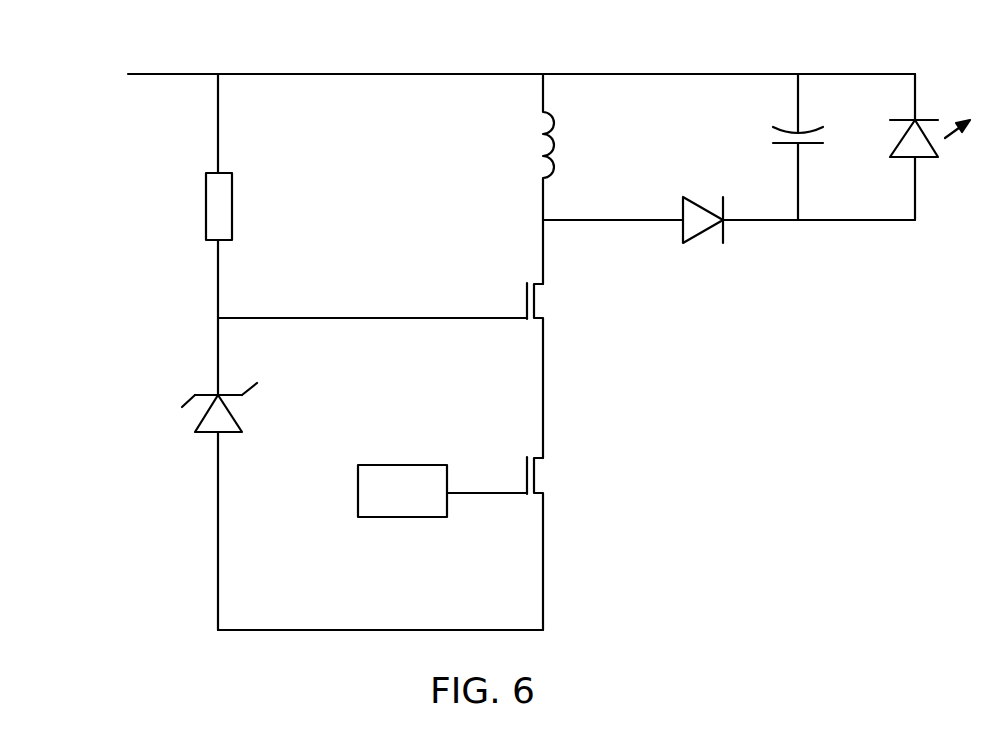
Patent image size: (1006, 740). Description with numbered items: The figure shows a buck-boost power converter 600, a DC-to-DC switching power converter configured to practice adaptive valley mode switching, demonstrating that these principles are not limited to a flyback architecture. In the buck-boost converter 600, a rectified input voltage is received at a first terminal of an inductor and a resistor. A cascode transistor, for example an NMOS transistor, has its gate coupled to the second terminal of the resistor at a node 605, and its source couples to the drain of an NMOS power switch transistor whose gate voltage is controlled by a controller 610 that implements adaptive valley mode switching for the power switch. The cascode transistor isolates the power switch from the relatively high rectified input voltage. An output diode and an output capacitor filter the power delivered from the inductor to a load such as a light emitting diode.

The buck-boost power converter 600 is at (518, 32).
The node 605 is at (216, 318).
The controller 610 is at (403, 517).